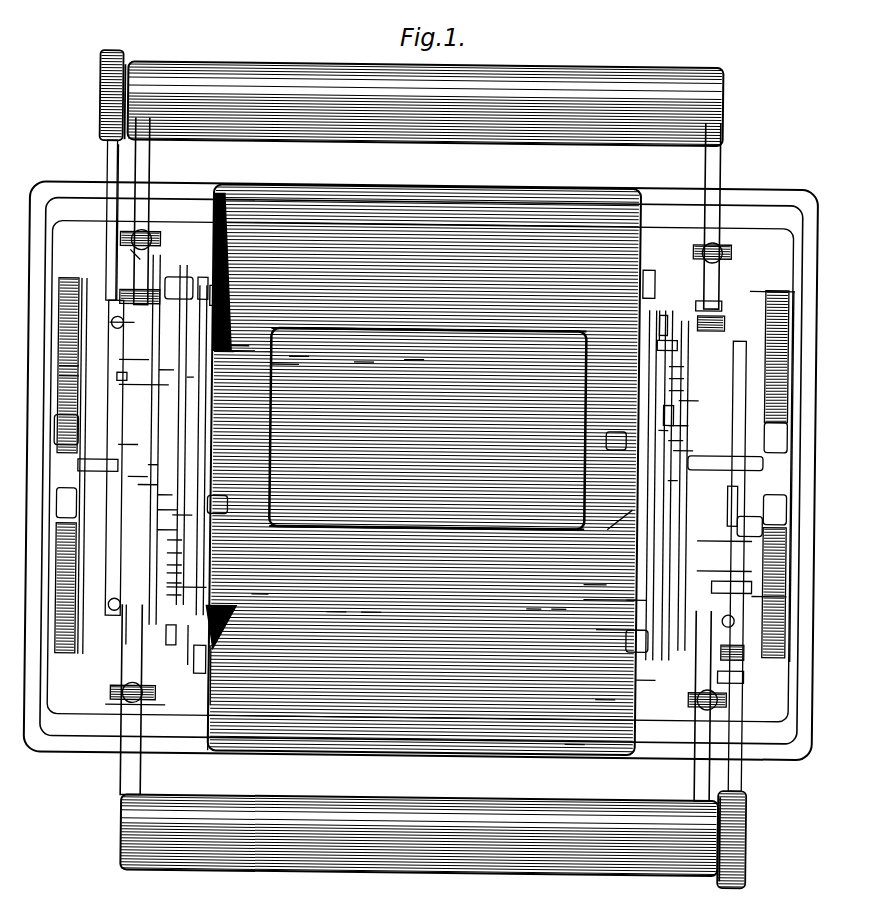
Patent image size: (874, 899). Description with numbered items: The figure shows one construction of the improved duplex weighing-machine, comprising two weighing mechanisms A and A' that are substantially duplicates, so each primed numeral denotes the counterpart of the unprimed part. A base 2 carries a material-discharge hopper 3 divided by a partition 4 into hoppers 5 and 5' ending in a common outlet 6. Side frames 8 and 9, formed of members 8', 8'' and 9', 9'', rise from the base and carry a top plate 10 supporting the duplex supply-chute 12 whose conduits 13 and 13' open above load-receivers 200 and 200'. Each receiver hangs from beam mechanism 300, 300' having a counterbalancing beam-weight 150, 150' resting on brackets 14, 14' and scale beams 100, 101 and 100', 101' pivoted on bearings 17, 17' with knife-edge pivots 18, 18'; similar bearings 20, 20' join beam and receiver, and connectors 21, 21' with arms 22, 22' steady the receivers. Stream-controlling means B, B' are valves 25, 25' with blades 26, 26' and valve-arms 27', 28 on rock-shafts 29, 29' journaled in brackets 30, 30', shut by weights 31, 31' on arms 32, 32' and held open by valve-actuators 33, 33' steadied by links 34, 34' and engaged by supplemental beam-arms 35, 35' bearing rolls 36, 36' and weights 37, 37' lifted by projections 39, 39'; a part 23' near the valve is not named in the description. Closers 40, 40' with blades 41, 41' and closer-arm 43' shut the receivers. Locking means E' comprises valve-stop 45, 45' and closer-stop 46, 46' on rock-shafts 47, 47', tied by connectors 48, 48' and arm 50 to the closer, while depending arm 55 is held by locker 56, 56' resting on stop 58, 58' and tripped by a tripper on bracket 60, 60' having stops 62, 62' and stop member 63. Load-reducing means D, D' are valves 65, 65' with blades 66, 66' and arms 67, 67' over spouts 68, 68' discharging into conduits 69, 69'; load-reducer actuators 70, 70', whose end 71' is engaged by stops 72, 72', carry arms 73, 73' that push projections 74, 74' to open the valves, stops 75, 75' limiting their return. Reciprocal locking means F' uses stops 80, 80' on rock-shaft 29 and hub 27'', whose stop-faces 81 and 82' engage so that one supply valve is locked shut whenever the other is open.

The frame 2 is at (780, 744).
The bearing bracket 3 is at (640, 670).
The shaft 4 is at (120, 472).
The bracket 5 is at (651, 523).
The bracket 5' is at (174, 430).
The shaft 6 is at (130, 480).
The rack 8 is at (799, 476).
The rack bar 8' is at (786, 593).
The rack bar 8'' is at (792, 357).
The rack 9 is at (58, 465).
The rack bar 9' is at (51, 587).
The rack bar 9'' is at (53, 365).
The block 10 is at (58, 495).
The inner cylinder 12 is at (437, 525).
The sleeve 13 is at (239, 602).
The sleeve 13' is at (341, 257).
The arm 14 is at (415, 702).
The arm 14' is at (448, 213).
The pivot 17 is at (393, 711).
The pivot 17' is at (427, 233).
The hub 18 is at (401, 696).
The hub 18' is at (426, 244).
The collar 20 is at (421, 638).
The collar 20' is at (418, 296).
The plate 21 is at (168, 645).
The plate 21' is at (680, 304).
The block 22 is at (188, 656).
The block 22' is at (668, 267).
The shaft end 23' is at (297, 363).
The roller 25 is at (300, 692).
The roller 25' is at (391, 260).
The roller 26 is at (334, 692).
The roller 26' is at (433, 260).
The upper cylinder 27' is at (429, 353).
The journal 27'' is at (681, 310).
The lower cylinder 28 is at (560, 562).
The bearing 29 is at (600, 585).
The bearing 29' is at (52, 365).
The block 30 is at (762, 519).
The block 30' is at (52, 383).
The bearing block 31 is at (653, 654).
The bearing block 31' is at (174, 280).
The screw 32 is at (685, 647).
The screw 32' is at (110, 329).
The plate 33 is at (621, 620).
The plate 33' is at (115, 351).
The rod 34 is at (755, 528).
The rod 34' is at (127, 394).
The lever 35 is at (782, 586).
The lever 35' is at (110, 319).
The collar 36 is at (734, 586).
The collar 36' is at (104, 373).
The knob 37 is at (748, 615).
The knob 37' is at (98, 175).
The shaft 39 is at (746, 839).
The shaft 39' is at (148, 102).
The pawl 40 is at (148, 535).
The pawl 40' is at (200, 278).
The pawl 41 is at (148, 548).
The pawl 41' is at (200, 288).
The pin 43' is at (175, 386).
The bar 45 is at (744, 495).
The bar 45' is at (66, 430).
The gear 46 is at (629, 605).
The gear 46' is at (142, 504).
The disk 47 is at (212, 450).
The disk 47' is at (213, 435).
The lever 48 is at (147, 575).
The lever 48' is at (119, 459).
The spring 50 is at (160, 568).
The link 55 is at (686, 440).
The shaft 56 is at (577, 741).
The shaft 56' is at (249, 256).
The sleeve 58 is at (552, 772).
The sleeve 58' is at (274, 249).
The block 60 is at (776, 494).
The block 60' is at (92, 465).
The plate 62 is at (696, 485).
The plate 62' is at (385, 482).
The bar 63 is at (725, 455).
The lever 65 is at (140, 522).
The lever 65' is at (715, 438).
The pin 66 is at (218, 504).
The pin 66' is at (614, 441).
The screw 67 is at (101, 609).
The screw 67' is at (709, 417).
The stud 68 is at (161, 636).
The stud 68' is at (694, 413).
The block 69 is at (775, 440).
The block 69' is at (134, 538).
The link 70 is at (120, 729).
The link 70' is at (772, 281).
The collar 71' is at (347, 543).
The rod 72 is at (725, 559).
The rod 72' is at (149, 386).
The arm 73 is at (137, 561).
The arm 73' is at (701, 382).
The arm 74 is at (150, 589).
The arm 74' is at (701, 370).
The arm 75 is at (198, 587).
The arm 75' is at (701, 358).
The bearing 80 is at (530, 619).
The bearing 80' is at (717, 389).
The bearing 81 is at (556, 619).
The stop 82' is at (684, 342).
The nut 100 is at (747, 677).
The nut 100' is at (729, 301).
The washer 101 is at (108, 627).
The washer 101' is at (105, 255).
The lower roller 150 is at (419, 845).
The upper roller 150' is at (426, 95).
The lower drum 200 is at (369, 713).
The upper drum 200' is at (423, 455).
The shaft 300 is at (106, 486).
The shaft 300' is at (440, 225).
The head A is at (411, 713).
The head A' is at (232, 205).
The bearing B is at (609, 605).
The bearing B' is at (242, 350).
The disk D is at (172, 511).
The disk D' is at (672, 427).
The eccentric E' is at (419, 462).
The frame piece F' is at (618, 520).